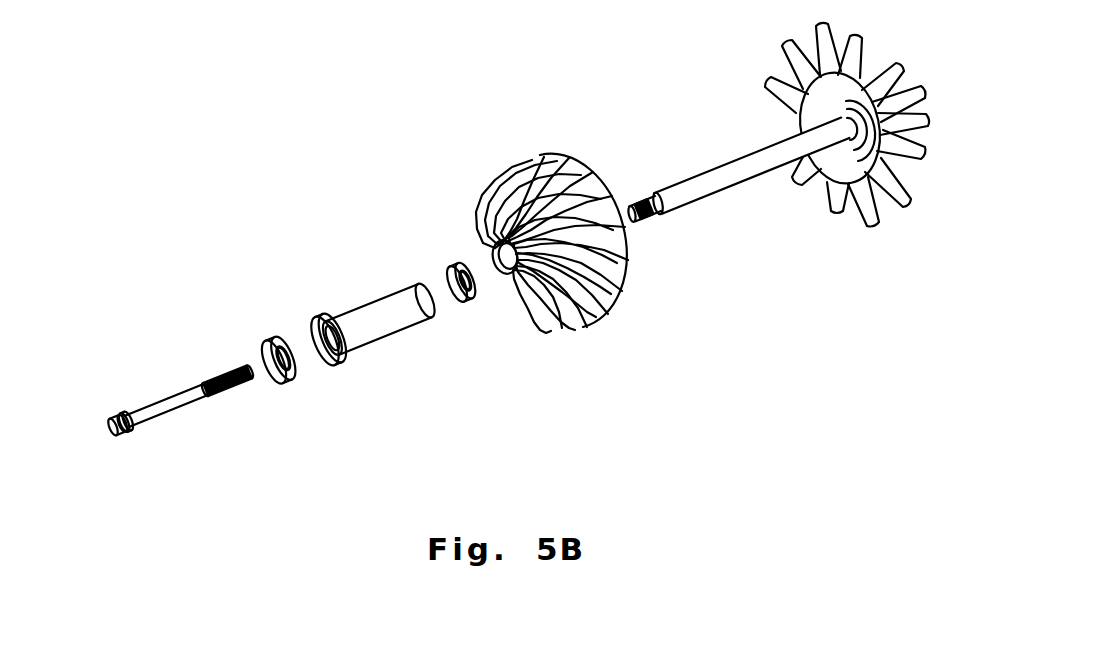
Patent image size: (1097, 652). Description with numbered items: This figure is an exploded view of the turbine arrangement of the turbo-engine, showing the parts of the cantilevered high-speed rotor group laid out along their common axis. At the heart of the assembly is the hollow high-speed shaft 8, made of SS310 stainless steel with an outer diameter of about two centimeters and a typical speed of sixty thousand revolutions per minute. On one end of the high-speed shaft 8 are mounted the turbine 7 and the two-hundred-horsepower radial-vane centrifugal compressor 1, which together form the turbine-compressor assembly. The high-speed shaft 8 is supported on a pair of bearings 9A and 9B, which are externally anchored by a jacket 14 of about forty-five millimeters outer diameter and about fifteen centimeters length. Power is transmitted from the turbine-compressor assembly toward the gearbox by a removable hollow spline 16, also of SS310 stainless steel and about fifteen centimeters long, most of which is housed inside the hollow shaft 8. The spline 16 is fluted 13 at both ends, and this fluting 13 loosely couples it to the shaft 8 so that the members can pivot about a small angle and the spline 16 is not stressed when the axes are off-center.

The centrifugal compressor 1 is at (600, 315).
The turbine 7 is at (868, 230).
The high-speed shaft 8 is at (710, 165).
The bearing 9A is at (450, 262).
The bearing 9B is at (273, 335).
The fluting 13 is at (231, 372).
The jacket 14 is at (373, 343).
The spline 16 is at (190, 405).